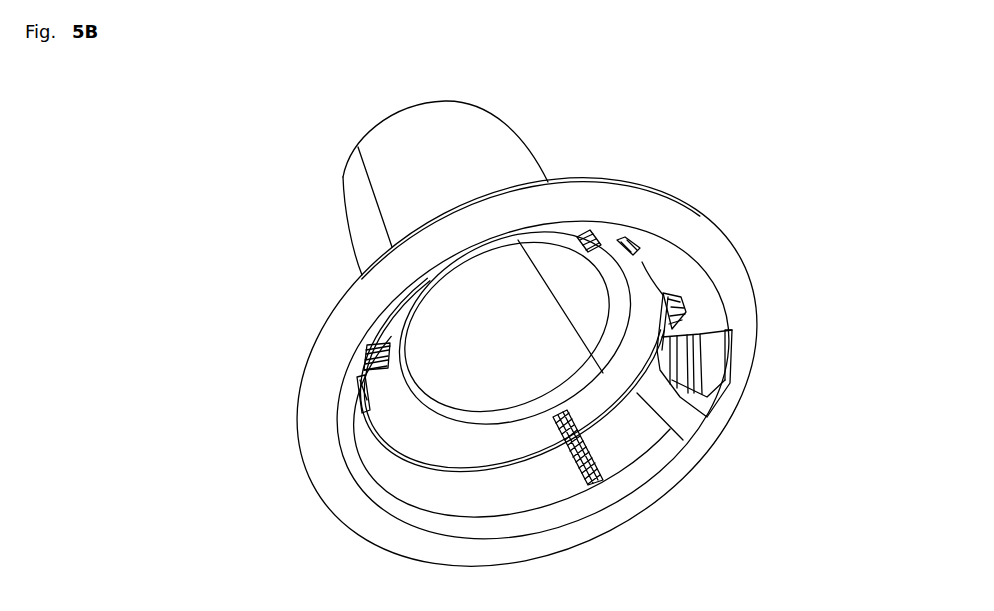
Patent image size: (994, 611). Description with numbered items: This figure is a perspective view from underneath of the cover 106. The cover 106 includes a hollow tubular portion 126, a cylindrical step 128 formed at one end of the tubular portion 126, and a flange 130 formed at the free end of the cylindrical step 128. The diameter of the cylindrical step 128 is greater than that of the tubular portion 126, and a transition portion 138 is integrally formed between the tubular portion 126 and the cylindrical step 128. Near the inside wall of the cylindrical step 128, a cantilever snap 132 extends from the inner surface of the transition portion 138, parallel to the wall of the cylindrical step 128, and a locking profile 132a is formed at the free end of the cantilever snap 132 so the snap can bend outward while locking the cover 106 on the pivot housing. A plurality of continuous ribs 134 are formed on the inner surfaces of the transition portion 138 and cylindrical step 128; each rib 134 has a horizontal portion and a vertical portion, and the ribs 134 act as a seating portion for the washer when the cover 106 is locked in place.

The cover 106 is at (222, 202).
The hollow tubular portion 126 is at (500, 147).
The cylindrical step 128 is at (620, 445).
The flange 130 is at (323, 405).
The cantilever snap 132 is at (681, 297).
The locking profile 132a is at (657, 358).
The continuous ribs 134 is at (568, 441).
The transition portion 138 is at (607, 390).